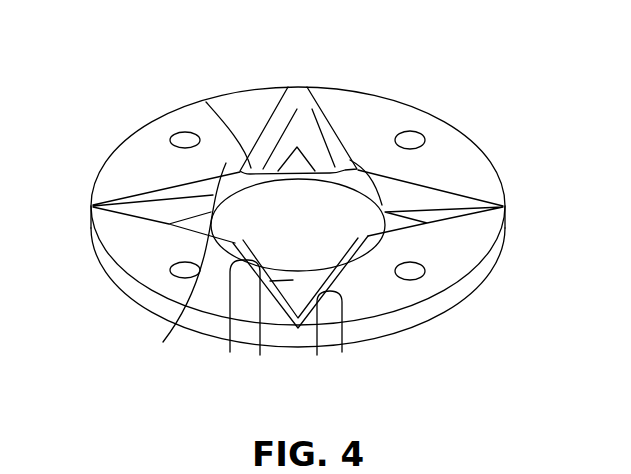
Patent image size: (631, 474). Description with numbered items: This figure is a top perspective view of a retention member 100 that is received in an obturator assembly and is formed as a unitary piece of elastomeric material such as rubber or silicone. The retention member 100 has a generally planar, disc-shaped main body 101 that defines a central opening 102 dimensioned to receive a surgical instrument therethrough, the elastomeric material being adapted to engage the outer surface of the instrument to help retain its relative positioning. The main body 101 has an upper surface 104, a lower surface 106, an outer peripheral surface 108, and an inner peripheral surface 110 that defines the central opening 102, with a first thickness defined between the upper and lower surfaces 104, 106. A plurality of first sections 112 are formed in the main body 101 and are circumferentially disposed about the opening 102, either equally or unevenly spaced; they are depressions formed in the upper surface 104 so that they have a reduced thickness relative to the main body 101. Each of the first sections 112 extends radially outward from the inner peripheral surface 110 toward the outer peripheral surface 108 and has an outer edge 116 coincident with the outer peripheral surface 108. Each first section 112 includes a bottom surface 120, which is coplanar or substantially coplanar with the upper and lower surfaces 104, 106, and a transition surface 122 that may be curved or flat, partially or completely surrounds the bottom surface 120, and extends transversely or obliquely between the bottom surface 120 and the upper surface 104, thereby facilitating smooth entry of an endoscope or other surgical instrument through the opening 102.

The retention member 100 is at (308, 215).
The main body 101 is at (378, 98).
The central opening 102 is at (197, 313).
The upper surface 104 is at (478, 240).
The lower surface 106 is at (430, 320).
The outer peripheral surface 108 is at (475, 292).
The inner peripheral surface 110 is at (206, 102).
The first sections 112 is at (310, 126).
The outer edge 116 is at (297, 147).
The bottom surface 120 is at (260, 356).
The transition surface 122 is at (230, 355).